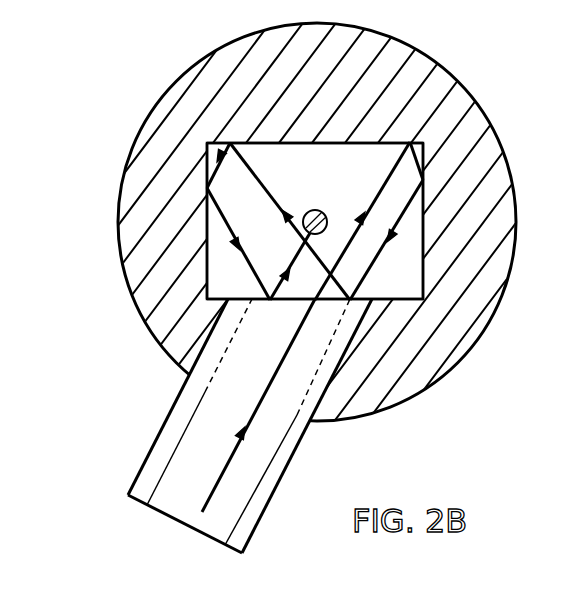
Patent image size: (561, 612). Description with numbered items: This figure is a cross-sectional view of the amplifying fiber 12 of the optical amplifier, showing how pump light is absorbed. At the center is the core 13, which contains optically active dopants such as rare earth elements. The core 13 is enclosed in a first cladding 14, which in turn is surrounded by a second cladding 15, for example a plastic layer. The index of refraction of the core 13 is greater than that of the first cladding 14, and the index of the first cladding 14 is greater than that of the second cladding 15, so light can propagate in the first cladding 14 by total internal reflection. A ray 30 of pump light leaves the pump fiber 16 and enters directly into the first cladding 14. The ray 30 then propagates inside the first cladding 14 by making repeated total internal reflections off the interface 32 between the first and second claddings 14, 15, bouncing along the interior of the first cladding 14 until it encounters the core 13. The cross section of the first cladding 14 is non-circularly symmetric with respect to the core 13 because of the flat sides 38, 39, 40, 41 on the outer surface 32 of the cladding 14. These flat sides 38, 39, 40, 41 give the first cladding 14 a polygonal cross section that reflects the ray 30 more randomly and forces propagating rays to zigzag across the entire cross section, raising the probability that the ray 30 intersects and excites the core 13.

The amplifying fiber 12 is at (104, 322).
The core 13 is at (322, 209).
The first cladding 14 is at (306, 182).
The second cladding 15 is at (323, 108).
The pump fiber 16 is at (178, 398).
The ray 30 is at (236, 454).
The interface 32 is at (235, 142).
The flat side 38 is at (347, 142).
The flat side 39 is at (425, 215).
The flat side 40 is at (408, 303).
The flat side 41 is at (205, 233).